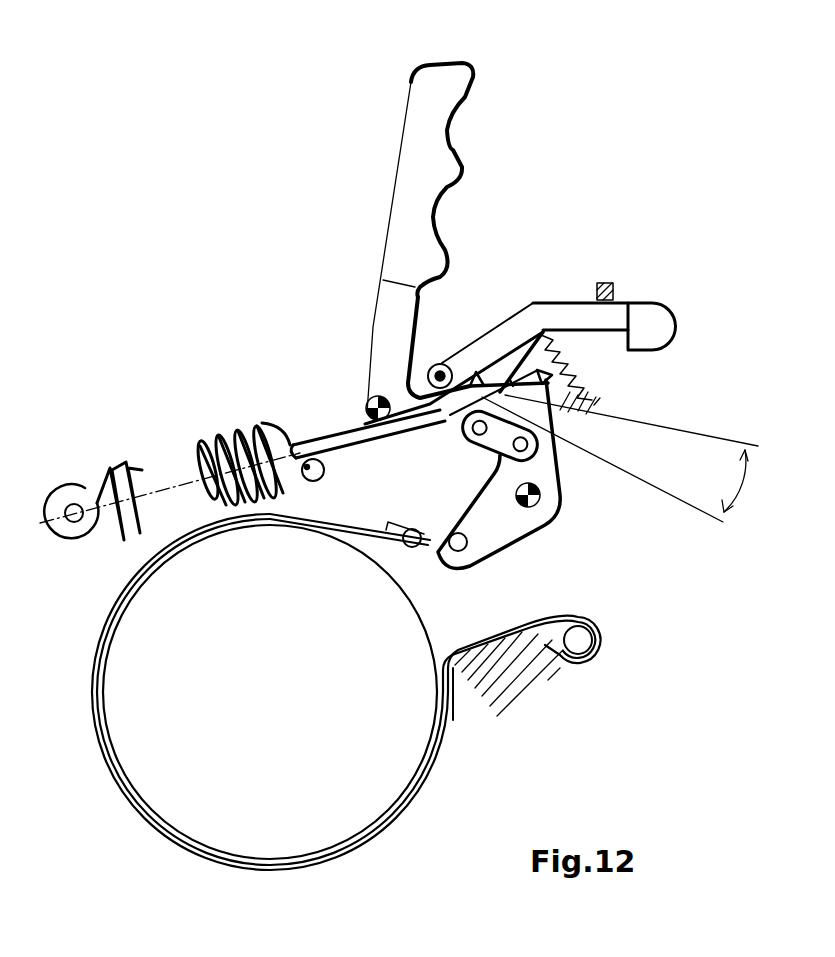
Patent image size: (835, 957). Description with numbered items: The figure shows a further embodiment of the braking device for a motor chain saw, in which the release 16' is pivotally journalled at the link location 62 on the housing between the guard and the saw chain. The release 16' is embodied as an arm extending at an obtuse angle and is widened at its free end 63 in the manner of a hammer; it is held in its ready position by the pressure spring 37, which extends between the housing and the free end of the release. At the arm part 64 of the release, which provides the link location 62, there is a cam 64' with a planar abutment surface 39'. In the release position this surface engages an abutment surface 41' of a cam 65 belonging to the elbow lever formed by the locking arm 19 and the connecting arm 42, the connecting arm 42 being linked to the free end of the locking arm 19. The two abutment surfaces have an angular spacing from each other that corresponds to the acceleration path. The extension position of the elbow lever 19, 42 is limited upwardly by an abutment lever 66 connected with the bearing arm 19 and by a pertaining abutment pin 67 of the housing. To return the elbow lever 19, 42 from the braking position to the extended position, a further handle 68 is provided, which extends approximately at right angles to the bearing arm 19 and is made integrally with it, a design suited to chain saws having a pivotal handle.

The further handle 68 is at (428, 163).
The link location 62 is at (441, 368).
The release 16' is at (604, 290).
The free end 63 is at (663, 318).
The arm part 64 is at (454, 339).
The cam 64' is at (589, 367).
The pressure spring 37 is at (570, 375).
The planar abutment surface 39' is at (478, 424).
The abutment lever 66 is at (348, 423).
The abutment pin 67 is at (290, 447).
The locking arm 19 is at (423, 423).
The connecting arm 42 is at (500, 442).
The cam 65 is at (560, 457).
The abutment surface 41' is at (620, 458).